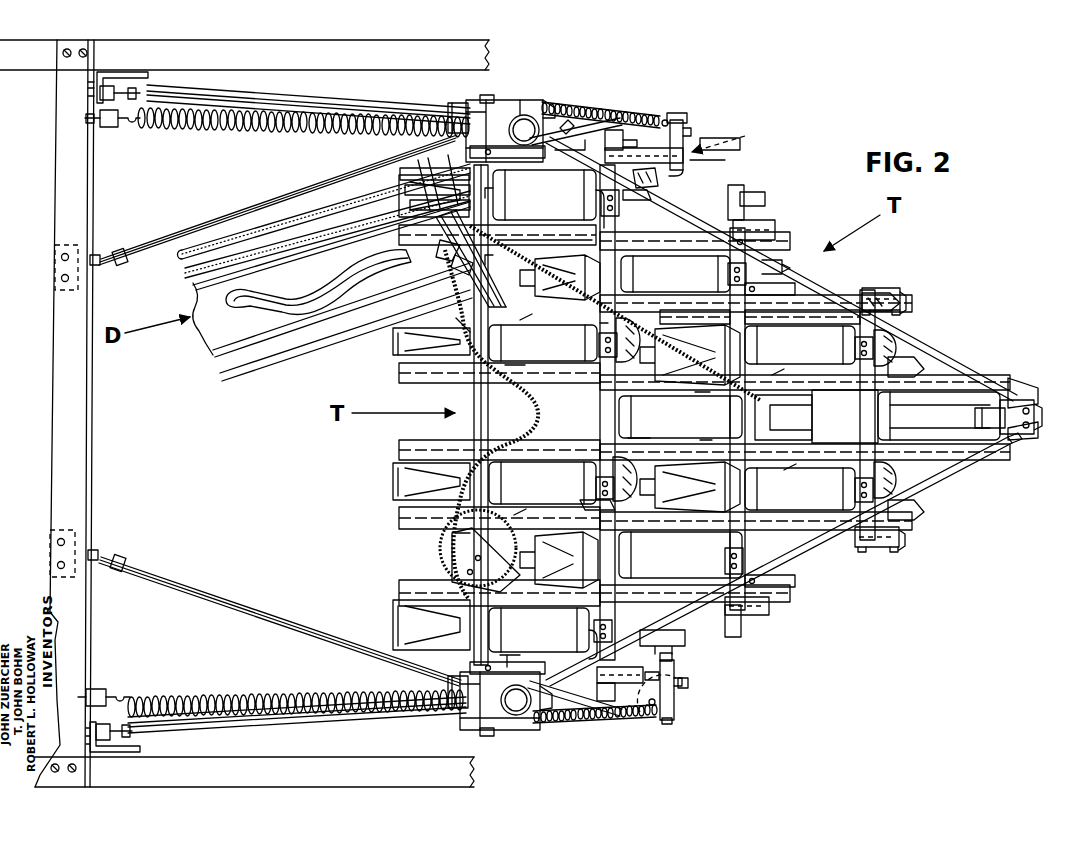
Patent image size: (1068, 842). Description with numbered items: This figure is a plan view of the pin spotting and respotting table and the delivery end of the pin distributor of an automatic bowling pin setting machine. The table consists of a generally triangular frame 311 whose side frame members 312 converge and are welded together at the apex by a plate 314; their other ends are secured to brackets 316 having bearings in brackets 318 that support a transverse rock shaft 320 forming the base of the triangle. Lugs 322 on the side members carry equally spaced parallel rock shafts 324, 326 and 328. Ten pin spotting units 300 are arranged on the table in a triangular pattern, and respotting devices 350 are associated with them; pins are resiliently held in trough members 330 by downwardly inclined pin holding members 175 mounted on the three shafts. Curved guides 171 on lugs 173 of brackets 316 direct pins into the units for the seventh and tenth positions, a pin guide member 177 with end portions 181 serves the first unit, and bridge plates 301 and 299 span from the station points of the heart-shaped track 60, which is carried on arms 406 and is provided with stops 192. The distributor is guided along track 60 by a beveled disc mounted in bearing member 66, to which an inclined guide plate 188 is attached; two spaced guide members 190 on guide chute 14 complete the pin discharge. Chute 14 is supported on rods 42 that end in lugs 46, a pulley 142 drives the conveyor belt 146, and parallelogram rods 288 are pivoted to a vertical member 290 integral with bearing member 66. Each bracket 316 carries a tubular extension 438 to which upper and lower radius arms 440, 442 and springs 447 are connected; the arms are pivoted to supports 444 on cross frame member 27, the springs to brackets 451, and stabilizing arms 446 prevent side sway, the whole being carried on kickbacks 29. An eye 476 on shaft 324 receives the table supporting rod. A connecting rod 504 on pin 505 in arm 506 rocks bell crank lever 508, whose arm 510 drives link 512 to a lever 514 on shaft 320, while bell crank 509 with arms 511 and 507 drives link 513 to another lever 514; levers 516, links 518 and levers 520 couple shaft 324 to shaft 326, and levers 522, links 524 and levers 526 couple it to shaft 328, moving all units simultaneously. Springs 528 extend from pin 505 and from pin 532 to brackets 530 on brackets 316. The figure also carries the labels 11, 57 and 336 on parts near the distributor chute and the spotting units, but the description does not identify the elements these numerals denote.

The blade 11 is at (255, 305).
The pin guide chute 14 is at (214, 352).
The cross frame member 27 is at (60, 188).
The kickbacks 29 is at (26, 65).
The horizontal rods 42 is at (185, 275).
The lug 46 is at (453, 263).
The fitting 57 is at (607, 381).
The horizontal track 60 is at (601, 323).
The bearing member 66 is at (458, 320).
The pulley 142 is at (395, 250).
The bowling pin conveyor belt 146 is at (200, 330).
The curved guides 171 is at (598, 200).
The lugs 173 is at (588, 145).
The pin holding members 175 is at (650, 205).
The pin guide member 177 is at (995, 428).
The end portions 181 is at (1032, 425).
The inclined guide plate 188 is at (503, 237).
The guide members 190 is at (499, 193).
The stops 192 is at (534, 413).
The rods 288 is at (180, 256).
The vertical member 290 is at (433, 163).
The bridge plate 299 is at (642, 440).
The pin spotting units 300 is at (950, 417).
The bridge plate 301 is at (862, 432).
The frame 311 is at (942, 490).
The side frame members 312 is at (775, 265).
The plate 314 is at (1005, 436).
The brackets 316 is at (555, 136).
The brackets 318 is at (492, 96).
The rock shaft 320 is at (484, 430).
The lugs 322 is at (737, 250).
The rock shaft 324 is at (613, 372).
The rock shaft 326 is at (564, 384).
The rock shaft 328 is at (865, 372).
The trough members 330 is at (930, 380).
The cam wedge 336 is at (658, 180).
The respotting devices 350 is at (382, 355).
The arms 406 is at (649, 415).
The extension 438 is at (550, 118).
The upper radius arm 440 is at (318, 128).
The lower radius arm 442 is at (403, 105).
The supports 444 is at (140, 70).
The stabilizing arms 446 is at (153, 238).
The springs 447 is at (242, 128).
The bracket 451 is at (112, 127).
The eye 476 is at (649, 116).
The connecting rod 504 is at (674, 673).
The pin 505 is at (670, 694).
The arm 506 is at (667, 684).
The arm 507 is at (688, 158).
The bell crank lever 508 is at (690, 683).
The bell crank 509 is at (686, 140).
The arm 510 is at (660, 717).
The arm 511 is at (693, 135).
The link 512 is at (590, 673).
The link 513 is at (612, 128).
The lever 514 is at (468, 108).
The levers 516 is at (638, 225).
The links 518 is at (727, 222).
The levers 520 is at (762, 225).
The levers 522 is at (780, 292).
The links 524 is at (860, 295).
The levers 526 is at (892, 295).
The springs 528 is at (594, 108).
The bracket 530 is at (497, 125).
The pin 532 is at (678, 112).